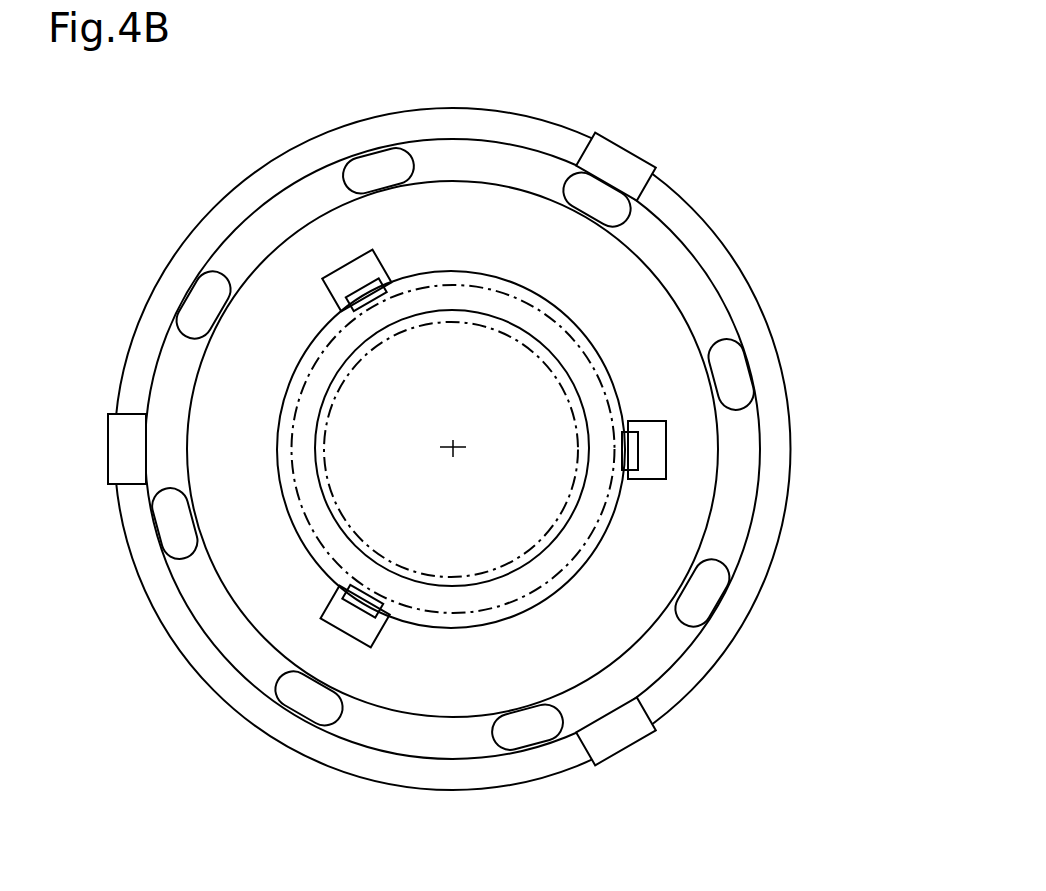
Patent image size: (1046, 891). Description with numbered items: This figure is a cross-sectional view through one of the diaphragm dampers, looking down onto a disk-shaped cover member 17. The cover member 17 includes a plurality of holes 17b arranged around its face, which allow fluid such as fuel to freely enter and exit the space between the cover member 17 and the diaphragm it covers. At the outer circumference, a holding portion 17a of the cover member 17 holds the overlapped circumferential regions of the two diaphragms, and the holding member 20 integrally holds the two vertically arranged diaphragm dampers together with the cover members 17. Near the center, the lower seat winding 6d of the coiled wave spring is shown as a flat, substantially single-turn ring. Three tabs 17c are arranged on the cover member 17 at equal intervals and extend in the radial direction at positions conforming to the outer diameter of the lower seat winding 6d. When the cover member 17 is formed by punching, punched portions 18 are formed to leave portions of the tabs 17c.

The cover member 17 is at (469, 403).
The holding portion 17a is at (527, 138).
The holes 17b is at (736, 368).
The tabs 17c is at (362, 294).
The punched portions 18 is at (358, 263).
The holding member 20 is at (618, 165).
The lower seat winding 6d is at (580, 345).